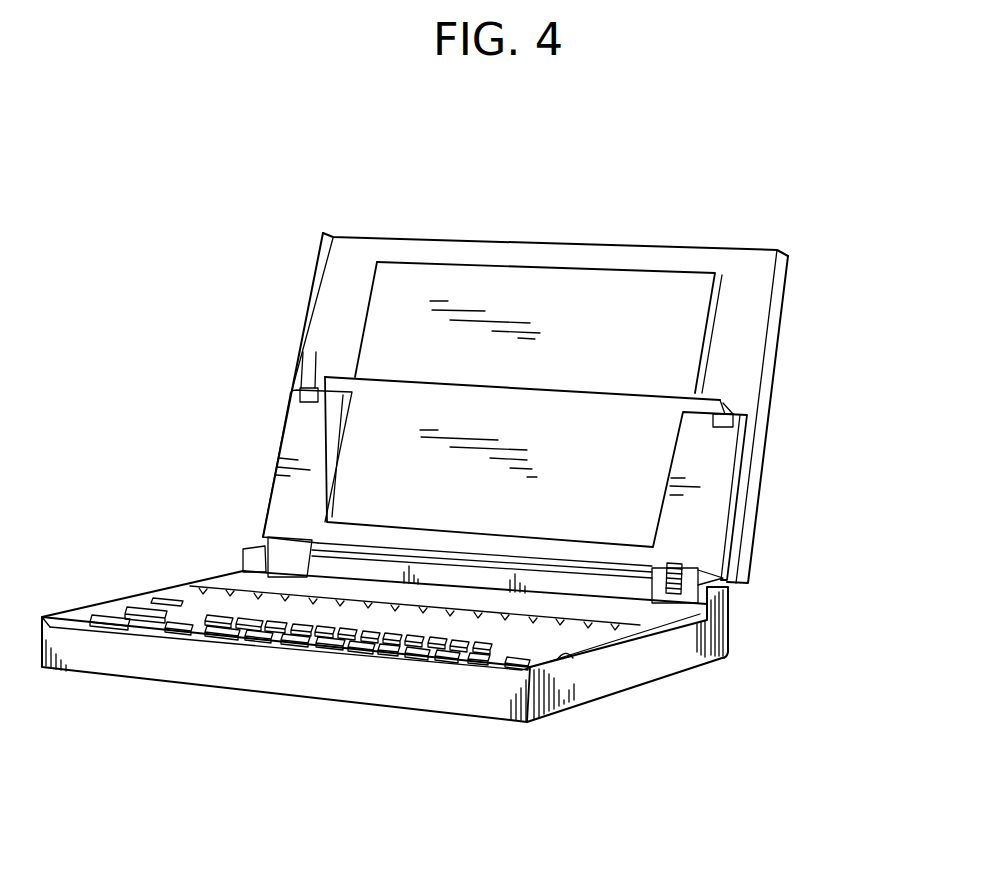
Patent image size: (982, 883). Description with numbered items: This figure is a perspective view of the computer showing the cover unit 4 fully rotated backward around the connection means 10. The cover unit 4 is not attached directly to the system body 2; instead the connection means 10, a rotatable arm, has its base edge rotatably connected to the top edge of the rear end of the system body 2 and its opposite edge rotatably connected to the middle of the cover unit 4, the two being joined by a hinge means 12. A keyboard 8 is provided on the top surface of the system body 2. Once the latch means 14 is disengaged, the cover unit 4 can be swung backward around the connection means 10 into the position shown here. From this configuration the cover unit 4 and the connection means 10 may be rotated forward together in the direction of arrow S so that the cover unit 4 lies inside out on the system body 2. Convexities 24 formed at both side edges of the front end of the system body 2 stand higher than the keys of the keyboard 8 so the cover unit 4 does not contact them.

The arrow S is at (658, 213).
The system body 2 is at (730, 621).
The cover unit 4 is at (777, 335).
The keyboard 8 is at (192, 583).
The connection means 10 is at (713, 495).
The hinge means 12 is at (312, 393).
The latch means 14 is at (678, 570).
The convexities 24 is at (62, 617).